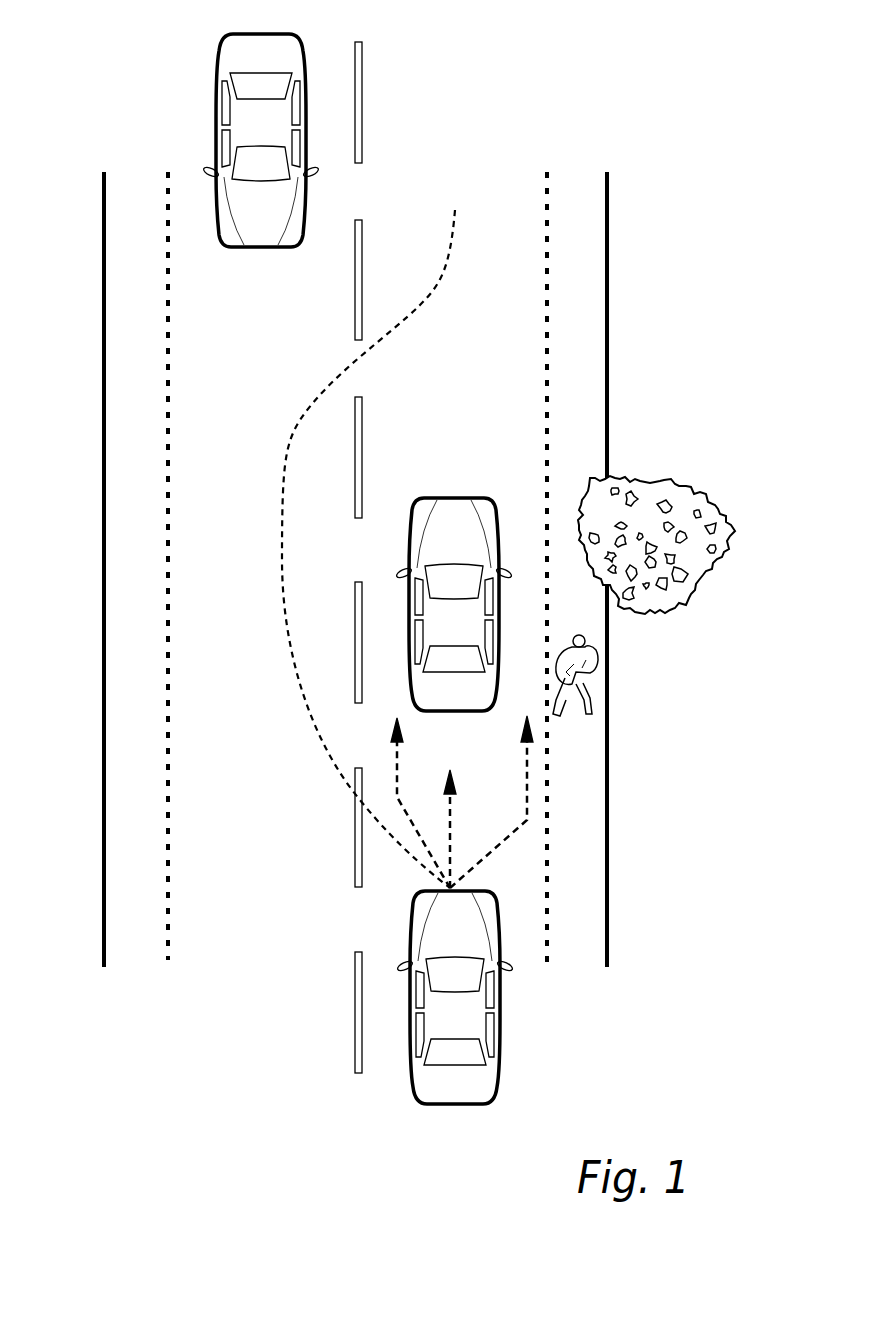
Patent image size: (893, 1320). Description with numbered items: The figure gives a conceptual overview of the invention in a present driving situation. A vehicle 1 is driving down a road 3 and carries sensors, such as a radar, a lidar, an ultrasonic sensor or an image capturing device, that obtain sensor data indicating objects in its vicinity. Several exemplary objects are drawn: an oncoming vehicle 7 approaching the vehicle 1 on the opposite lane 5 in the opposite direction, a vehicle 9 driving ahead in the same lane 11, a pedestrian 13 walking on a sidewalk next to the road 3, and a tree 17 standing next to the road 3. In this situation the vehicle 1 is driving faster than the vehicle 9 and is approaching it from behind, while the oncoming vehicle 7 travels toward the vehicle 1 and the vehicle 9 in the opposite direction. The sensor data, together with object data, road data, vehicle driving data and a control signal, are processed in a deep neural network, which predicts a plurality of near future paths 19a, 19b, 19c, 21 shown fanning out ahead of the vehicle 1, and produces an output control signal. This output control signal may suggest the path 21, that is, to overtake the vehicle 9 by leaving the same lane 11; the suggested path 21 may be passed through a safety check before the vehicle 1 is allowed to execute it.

The vehicle 1 is at (455, 1105).
The road 3 is at (213, 816).
The opposite lane 5 is at (182, 198).
The oncoming vehicle 7 is at (267, 248).
The vehicle 9 is at (460, 498).
The same lane 11 is at (505, 245).
The pedestrian 13 is at (602, 658).
The tree 17 is at (688, 490).
The near future path 19a is at (455, 840).
The near future path 19b is at (397, 772).
The near future path 19c is at (527, 795).
The path 21 is at (407, 853).